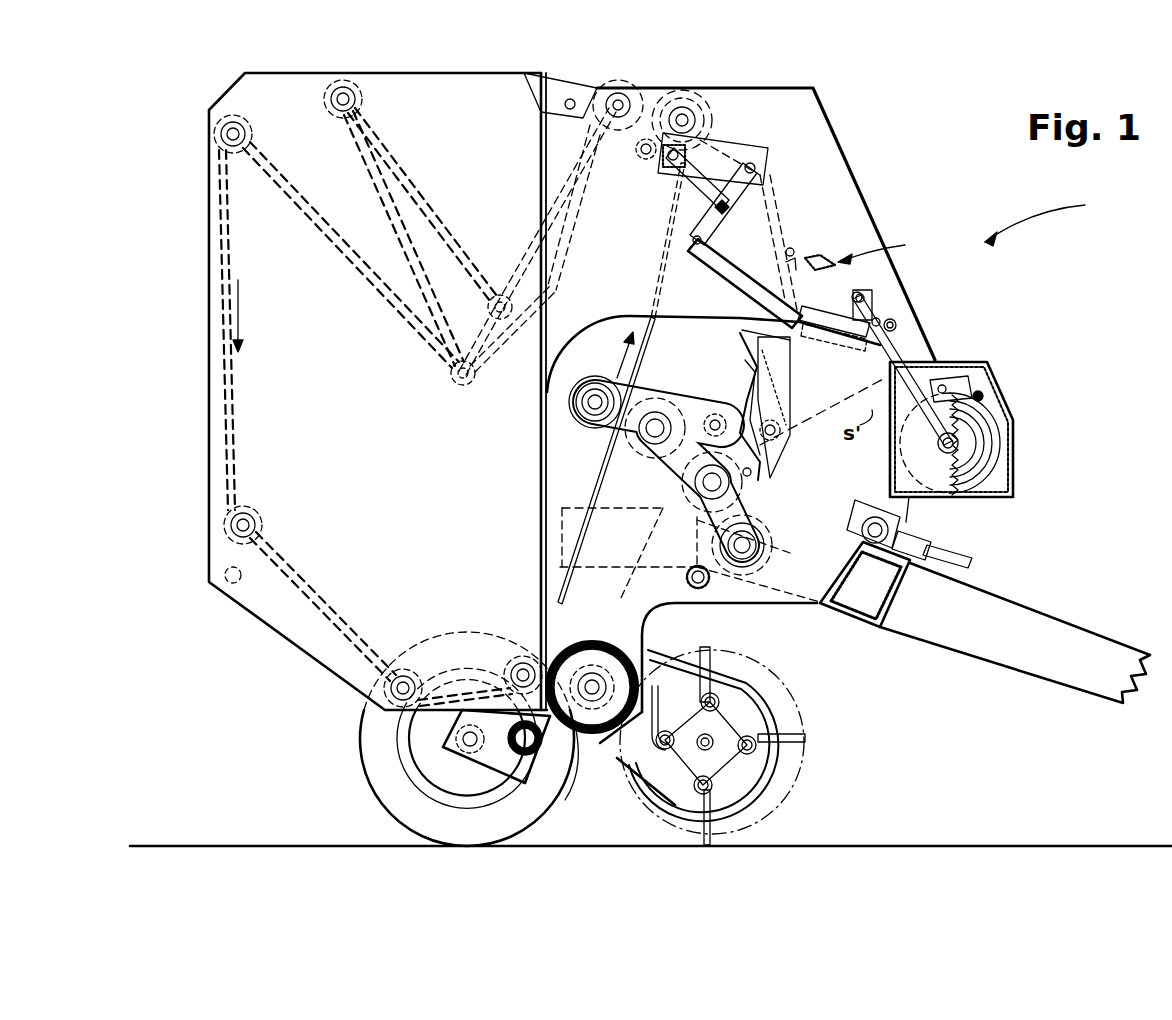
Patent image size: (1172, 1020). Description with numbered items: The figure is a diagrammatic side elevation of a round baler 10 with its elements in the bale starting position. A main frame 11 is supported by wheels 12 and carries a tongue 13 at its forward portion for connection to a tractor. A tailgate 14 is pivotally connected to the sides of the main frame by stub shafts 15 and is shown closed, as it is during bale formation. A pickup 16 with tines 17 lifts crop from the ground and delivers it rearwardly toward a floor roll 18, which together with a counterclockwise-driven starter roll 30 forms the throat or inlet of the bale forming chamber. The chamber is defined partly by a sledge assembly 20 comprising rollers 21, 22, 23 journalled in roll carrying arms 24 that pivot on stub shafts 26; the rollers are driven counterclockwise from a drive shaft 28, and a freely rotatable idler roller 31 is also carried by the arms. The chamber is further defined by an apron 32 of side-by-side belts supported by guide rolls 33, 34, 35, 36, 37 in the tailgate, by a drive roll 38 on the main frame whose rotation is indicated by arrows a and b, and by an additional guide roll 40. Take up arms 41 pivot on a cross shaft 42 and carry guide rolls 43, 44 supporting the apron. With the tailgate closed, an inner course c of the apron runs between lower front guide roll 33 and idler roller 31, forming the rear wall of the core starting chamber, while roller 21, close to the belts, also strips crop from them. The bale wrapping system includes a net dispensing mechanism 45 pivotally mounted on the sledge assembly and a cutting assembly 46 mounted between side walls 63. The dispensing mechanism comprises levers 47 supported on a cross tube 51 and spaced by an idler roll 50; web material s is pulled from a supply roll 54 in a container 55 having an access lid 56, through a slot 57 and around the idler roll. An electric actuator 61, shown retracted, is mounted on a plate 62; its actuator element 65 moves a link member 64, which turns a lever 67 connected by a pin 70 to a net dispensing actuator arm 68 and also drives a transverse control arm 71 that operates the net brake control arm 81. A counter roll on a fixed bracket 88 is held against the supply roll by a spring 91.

The round baler 10 is at (1052, 220).
The main frame 11 is at (650, 612).
The wheels 12 is at (370, 757).
The tongue 13 is at (1090, 628).
The tailgate 14 is at (447, 72).
The stub shafts 15 is at (563, 104).
The pickup 16 is at (817, 723).
The tines 17 is at (775, 783).
The floor roll 18 is at (555, 720).
The sledge assembly 20 is at (587, 438).
The roller 21 is at (650, 452).
The roller 22 is at (692, 490).
The roller 23 is at (722, 545).
The roll carrying arms 24 is at (762, 516).
The stub shafts 26 is at (764, 557).
The drive shaft 28 is at (962, 560).
The starter roll 30 is at (705, 588).
The idler roller 31 is at (567, 382).
The apron 32 is at (212, 378).
The guide roll 33 is at (523, 658).
The guide roll 34 is at (403, 670).
The guide roll 35 is at (243, 508).
The guide roll 36 is at (242, 150).
The guide roll 37 is at (330, 118).
The drive roll 38 is at (686, 100).
The guide roll 40 is at (647, 143).
The take up arms 41 is at (528, 235).
The cross shaft 42 is at (606, 88).
The guide roll 43 is at (463, 386).
The guide roll 44 is at (497, 298).
The net dispensing mechanism 45 is at (793, 378).
The cutting assembly 46 is at (871, 251).
The levers 47 is at (747, 412).
The idler roll 50 is at (776, 447).
The cross tube 51 is at (713, 418).
The supply roll 54 is at (1000, 428).
The container 55 is at (1016, 495).
The access lid 56 is at (998, 362).
The slot 57 is at (885, 380).
The electric actuator 61 is at (706, 158).
The plate 62 is at (745, 137).
The side wall 63 is at (822, 168).
The link member 64 is at (740, 198).
The actuator element 65 is at (700, 205).
The lever 67 is at (800, 195).
The net dispensing actuator arm 68 is at (792, 245).
The pin 70 is at (795, 246).
The control arm 71 is at (690, 257).
The net brake control arm 81 is at (918, 345).
The fixed bracket 88 is at (944, 482).
The spring 91 is at (948, 500).
The arrow a is at (622, 362).
The arrow b is at (240, 300).
The inner course c is at (598, 480).
The web material s is at (738, 347).